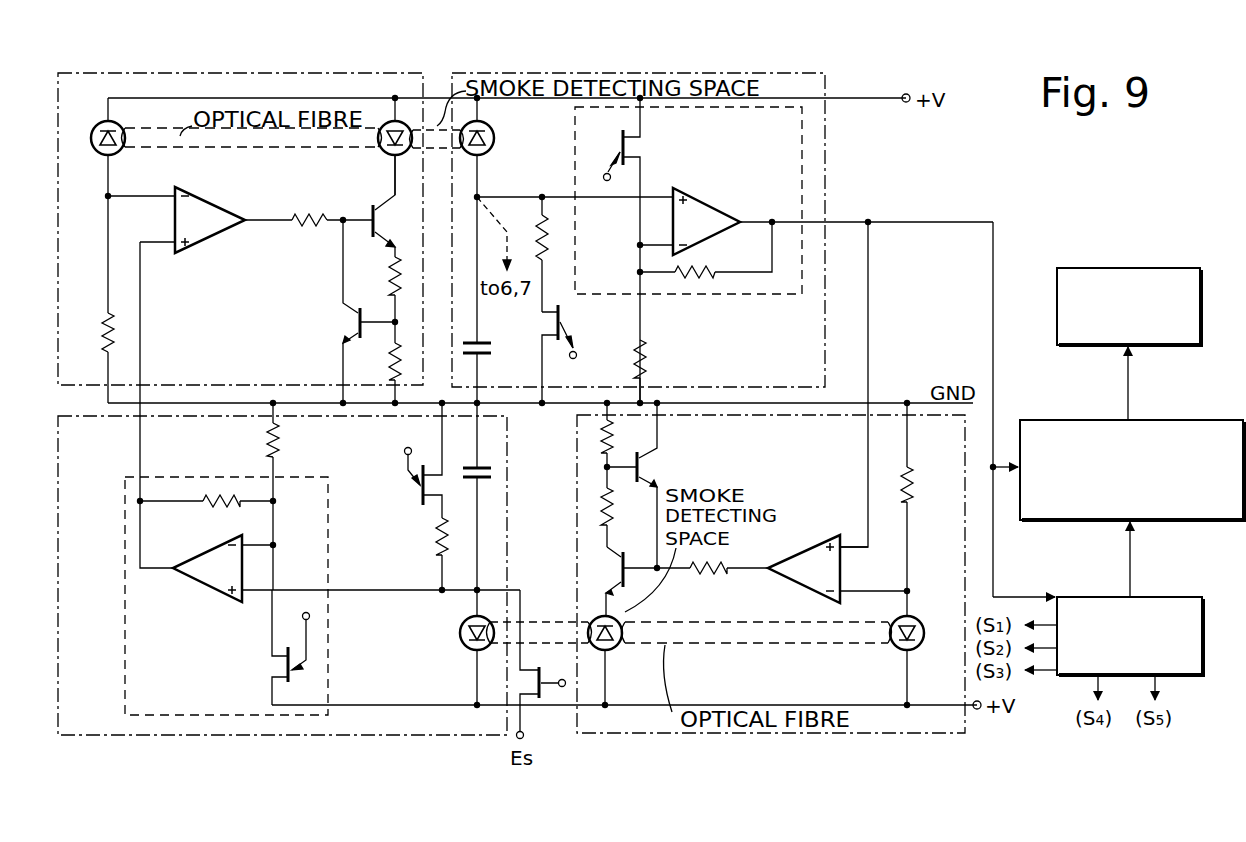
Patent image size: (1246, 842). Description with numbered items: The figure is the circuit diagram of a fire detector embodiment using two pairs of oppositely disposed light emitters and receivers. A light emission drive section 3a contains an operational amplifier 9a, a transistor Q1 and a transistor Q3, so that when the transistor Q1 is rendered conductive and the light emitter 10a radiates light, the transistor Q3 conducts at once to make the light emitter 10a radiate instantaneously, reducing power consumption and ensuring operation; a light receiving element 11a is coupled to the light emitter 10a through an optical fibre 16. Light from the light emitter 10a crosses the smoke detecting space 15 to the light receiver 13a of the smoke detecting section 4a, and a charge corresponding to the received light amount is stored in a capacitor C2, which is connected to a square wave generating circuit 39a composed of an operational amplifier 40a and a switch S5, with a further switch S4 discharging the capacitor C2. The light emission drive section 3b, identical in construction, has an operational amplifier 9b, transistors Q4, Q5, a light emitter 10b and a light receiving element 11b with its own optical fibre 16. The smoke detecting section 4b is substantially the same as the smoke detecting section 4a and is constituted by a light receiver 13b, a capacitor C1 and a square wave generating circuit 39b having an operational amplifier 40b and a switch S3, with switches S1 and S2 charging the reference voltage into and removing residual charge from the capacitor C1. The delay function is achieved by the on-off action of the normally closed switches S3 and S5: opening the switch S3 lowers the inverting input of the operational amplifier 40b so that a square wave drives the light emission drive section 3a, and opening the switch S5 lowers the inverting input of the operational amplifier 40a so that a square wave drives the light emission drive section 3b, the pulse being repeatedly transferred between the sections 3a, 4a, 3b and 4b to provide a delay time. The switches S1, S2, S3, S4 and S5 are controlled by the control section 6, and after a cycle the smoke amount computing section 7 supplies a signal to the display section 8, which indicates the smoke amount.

The light emission drive section 3a is at (85, 73).
The light emission drive section 3b is at (592, 735).
The smoke detecting section 4a is at (550, 73).
The smoke detecting section 4b is at (80, 736).
The control section 6 is at (1176, 590).
The smoke amount computing section 7 is at (1175, 420).
The display section 8 is at (1166, 268).
The operational amplifier 9a is at (215, 208).
The operational amplifier 9b is at (812, 538).
The light emitter 10a is at (384, 150).
The light emitter 10b is at (612, 648).
The light receiving element 11a is at (118, 152).
The light receiving element 11b is at (893, 647).
The light receiver 13a is at (490, 150).
The light receiver 13b is at (456, 635).
The smoke detecting space 15 is at (437, 151).
The optical fibre 16 is at (268, 148).
The square wave generating circuit 39a is at (760, 296).
The square wave generating circuit 39b is at (125, 670).
The operational amplifier 40a is at (728, 212).
The operational amplifier 40b is at (210, 600).
The transistor Q1 is at (393, 206).
The transistor Q3 is at (355, 322).
The transistor Q4 is at (618, 581).
The transistor Q5 is at (642, 465).
The switch S1 is at (539, 678).
The switch S2 is at (418, 499).
The switch S3 is at (293, 650).
The switch S4 is at (565, 318).
The switch S5 is at (620, 146).
The capacitor C1 is at (493, 474).
The capacitor C2 is at (492, 300).